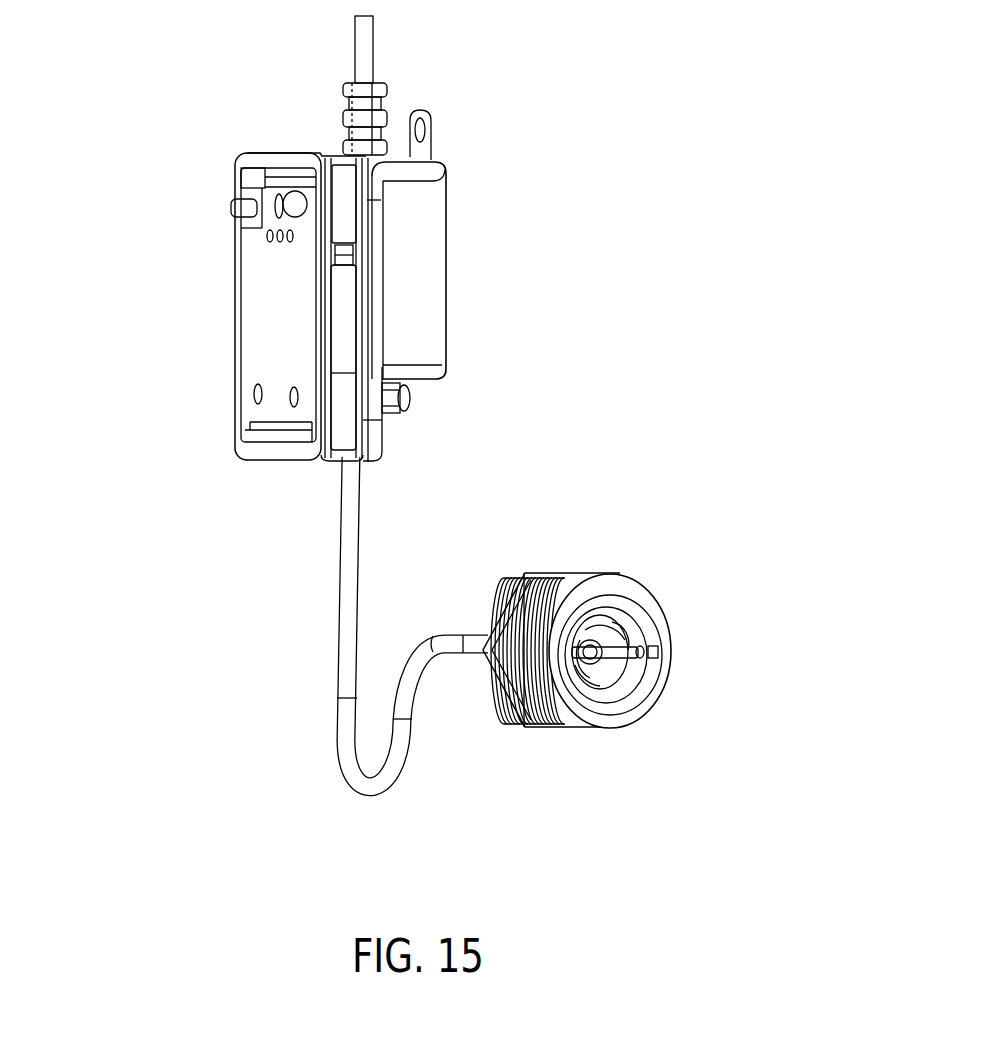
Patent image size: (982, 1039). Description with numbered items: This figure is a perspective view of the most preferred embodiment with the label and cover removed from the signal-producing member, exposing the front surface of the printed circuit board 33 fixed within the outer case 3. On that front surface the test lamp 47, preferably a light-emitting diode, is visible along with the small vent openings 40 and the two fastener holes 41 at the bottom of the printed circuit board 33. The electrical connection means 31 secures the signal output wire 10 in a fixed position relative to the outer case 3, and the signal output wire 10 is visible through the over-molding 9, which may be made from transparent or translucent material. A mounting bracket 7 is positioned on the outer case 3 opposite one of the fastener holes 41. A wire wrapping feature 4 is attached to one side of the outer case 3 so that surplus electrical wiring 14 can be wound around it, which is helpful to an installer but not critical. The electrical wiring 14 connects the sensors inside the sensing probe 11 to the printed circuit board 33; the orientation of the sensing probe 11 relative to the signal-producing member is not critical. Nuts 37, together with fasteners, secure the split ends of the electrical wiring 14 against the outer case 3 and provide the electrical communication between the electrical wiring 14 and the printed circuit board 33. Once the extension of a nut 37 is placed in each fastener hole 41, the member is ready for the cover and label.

The outer case 3 is at (455, 272).
The wire wrapping feature 4 is at (391, 308).
The mounting bracket 7 is at (443, 134).
The over-molding 9 is at (347, 90).
The signal output wire 10 is at (388, 35).
The sensing probe 11 is at (702, 562).
The electrical wiring 14 is at (325, 583).
The electrical connection means 31 is at (221, 201).
The printed circuit board 33 is at (179, 274).
The nut 37 is at (413, 400).
The vent openings 40 is at (250, 247).
The fastener holes 41 is at (234, 418).
The lamp 47 is at (291, 188).